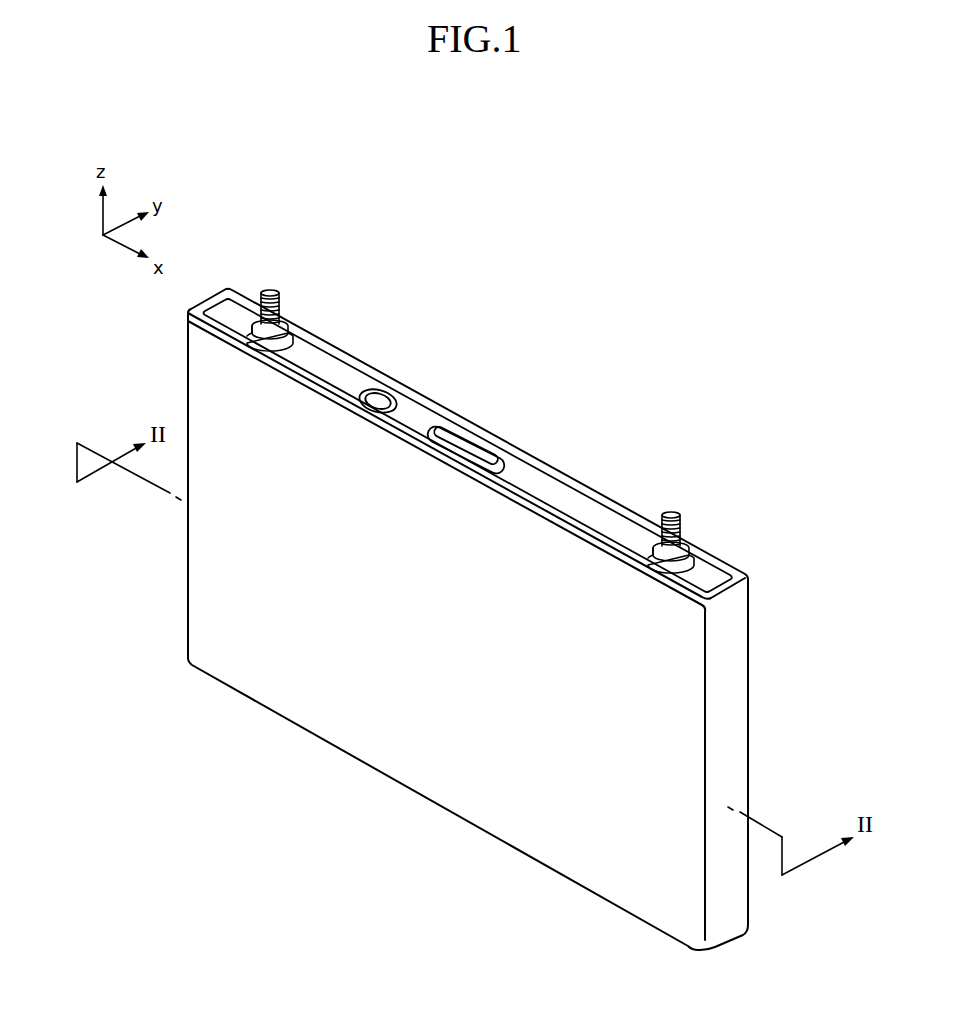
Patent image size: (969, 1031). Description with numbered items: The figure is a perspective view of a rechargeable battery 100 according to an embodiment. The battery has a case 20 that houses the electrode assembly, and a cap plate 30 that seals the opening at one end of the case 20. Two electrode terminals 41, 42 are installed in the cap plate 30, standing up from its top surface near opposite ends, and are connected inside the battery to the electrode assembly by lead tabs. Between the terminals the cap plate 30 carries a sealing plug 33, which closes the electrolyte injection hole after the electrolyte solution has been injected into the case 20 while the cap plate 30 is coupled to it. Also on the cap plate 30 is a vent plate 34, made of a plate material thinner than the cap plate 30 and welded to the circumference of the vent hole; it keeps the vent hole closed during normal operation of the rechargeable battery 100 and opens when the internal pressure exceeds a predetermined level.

The rechargeable battery 100 is at (626, 352).
The case 20 is at (445, 788).
The cap plate 30 is at (420, 416).
The sealing plug 33 is at (378, 394).
The vent plate 34 is at (469, 447).
The electrode terminal 41 is at (279, 283).
The electrode terminal 42 is at (678, 507).